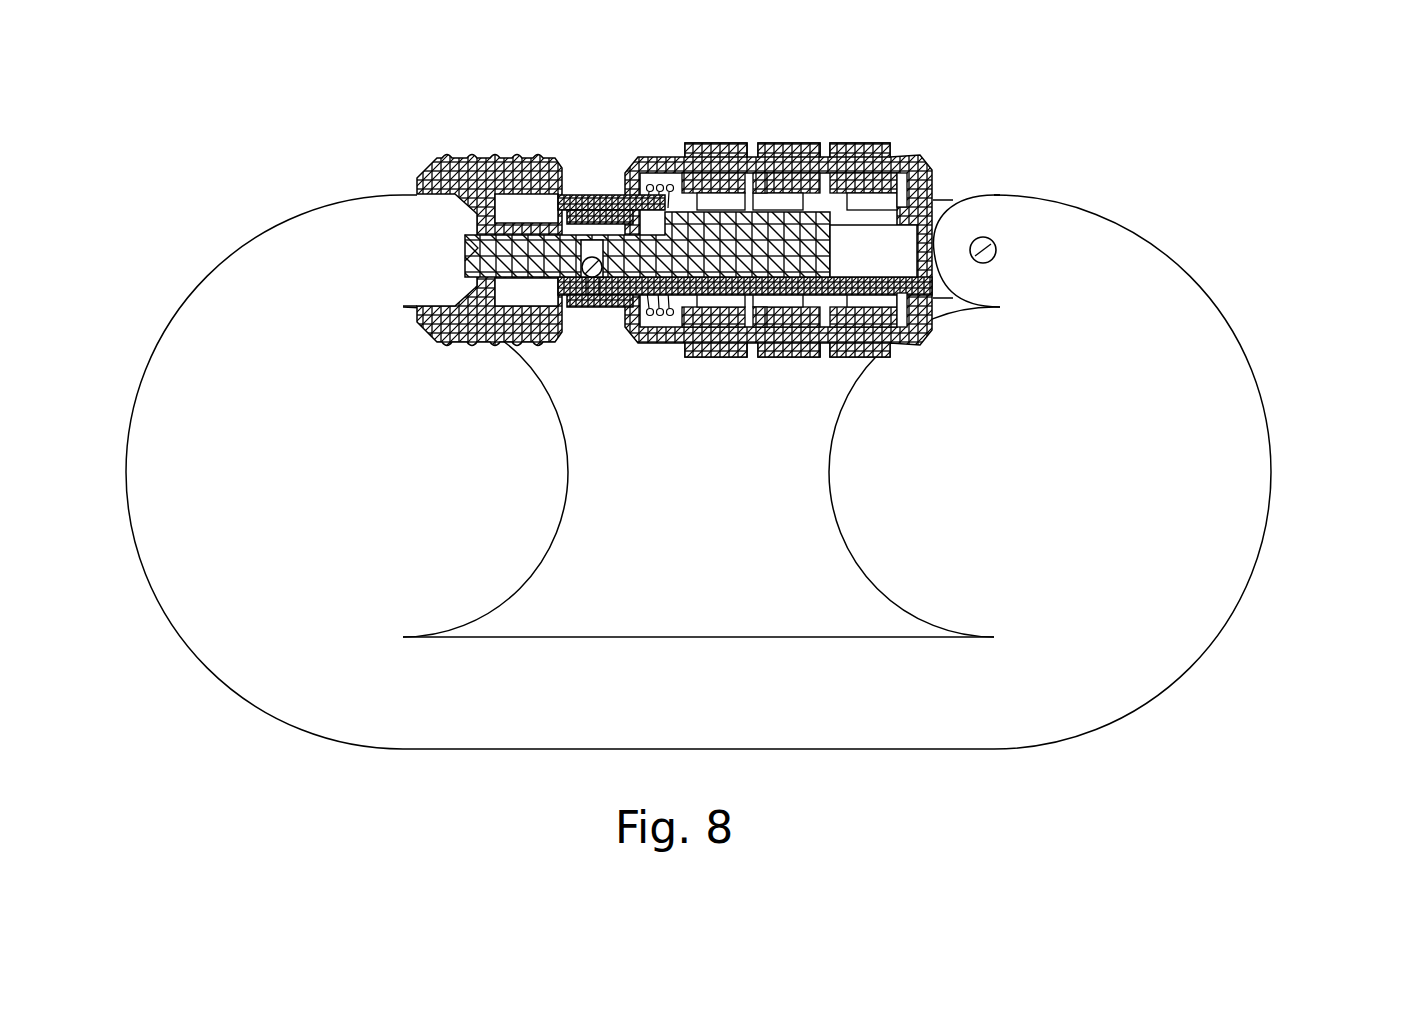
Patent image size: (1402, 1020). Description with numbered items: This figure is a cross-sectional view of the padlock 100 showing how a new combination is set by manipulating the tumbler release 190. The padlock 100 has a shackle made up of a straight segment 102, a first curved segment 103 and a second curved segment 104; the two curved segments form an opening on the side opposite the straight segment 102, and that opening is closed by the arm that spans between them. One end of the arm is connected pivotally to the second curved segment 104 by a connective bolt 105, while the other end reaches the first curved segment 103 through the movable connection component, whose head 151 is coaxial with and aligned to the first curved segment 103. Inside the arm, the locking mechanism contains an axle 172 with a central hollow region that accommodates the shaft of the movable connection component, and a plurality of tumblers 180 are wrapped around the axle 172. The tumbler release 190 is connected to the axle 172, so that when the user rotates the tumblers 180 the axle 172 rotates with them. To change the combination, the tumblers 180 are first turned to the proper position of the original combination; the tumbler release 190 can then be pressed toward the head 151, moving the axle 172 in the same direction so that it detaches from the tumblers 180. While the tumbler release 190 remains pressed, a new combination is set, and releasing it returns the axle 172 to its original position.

The padlock 100 is at (701, 404).
The straight segment 102 is at (675, 652).
The first curved segment 103 is at (158, 489).
The second curved segment 104 is at (1237, 512).
The connective bolt 105 is at (986, 243).
The head 151 is at (505, 157).
The axle 172 is at (780, 143).
The tumblers 180 is at (800, 143).
The tumbler release 190 is at (917, 193).